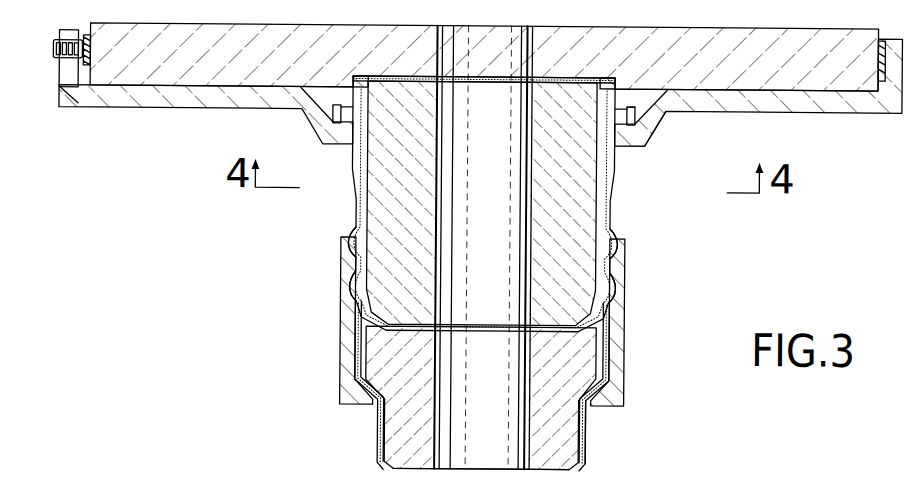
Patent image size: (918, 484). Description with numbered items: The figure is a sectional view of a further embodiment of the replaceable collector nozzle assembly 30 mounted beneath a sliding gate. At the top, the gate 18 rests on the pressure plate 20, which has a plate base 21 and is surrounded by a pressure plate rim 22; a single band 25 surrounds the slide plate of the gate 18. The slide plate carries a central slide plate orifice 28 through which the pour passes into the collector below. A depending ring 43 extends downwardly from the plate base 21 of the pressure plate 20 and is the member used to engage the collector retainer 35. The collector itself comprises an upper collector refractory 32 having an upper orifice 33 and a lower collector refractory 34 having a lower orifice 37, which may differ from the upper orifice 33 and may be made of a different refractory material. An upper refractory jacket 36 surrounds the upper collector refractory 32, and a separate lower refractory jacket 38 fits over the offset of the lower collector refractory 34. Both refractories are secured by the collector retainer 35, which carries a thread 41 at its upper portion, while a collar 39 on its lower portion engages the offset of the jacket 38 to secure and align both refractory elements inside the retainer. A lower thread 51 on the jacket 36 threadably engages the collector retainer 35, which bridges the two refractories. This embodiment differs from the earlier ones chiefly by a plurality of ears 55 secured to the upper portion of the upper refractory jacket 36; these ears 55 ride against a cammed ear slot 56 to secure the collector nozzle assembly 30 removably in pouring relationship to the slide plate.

The gate 18 is at (772, 26).
The pressure plate 20 is at (146, 120).
The plate base 21 is at (217, 110).
The pressure plate rim 22 is at (58, 82).
The band 25 is at (86, 38).
The slide plate orifice 28 is at (496, 60).
The collector nozzle assembly 30 is at (642, 288).
The upper collector refractory 32 is at (586, 214).
The upper orifice 33 is at (497, 231).
The lower collector refractory 34 is at (572, 469).
The collector retainer 35 is at (626, 358).
The upper refractory jacket 36 is at (607, 192).
The lower orifice 37 is at (492, 416).
The lower refractory jacket 38 is at (588, 418).
The collar 39 is at (626, 403).
The thread 41 is at (354, 282).
The depending ring 43 is at (659, 123).
The lower thread 51 is at (348, 248).
The ears 55 is at (333, 114).
The cammed ear slot 56 is at (636, 108).